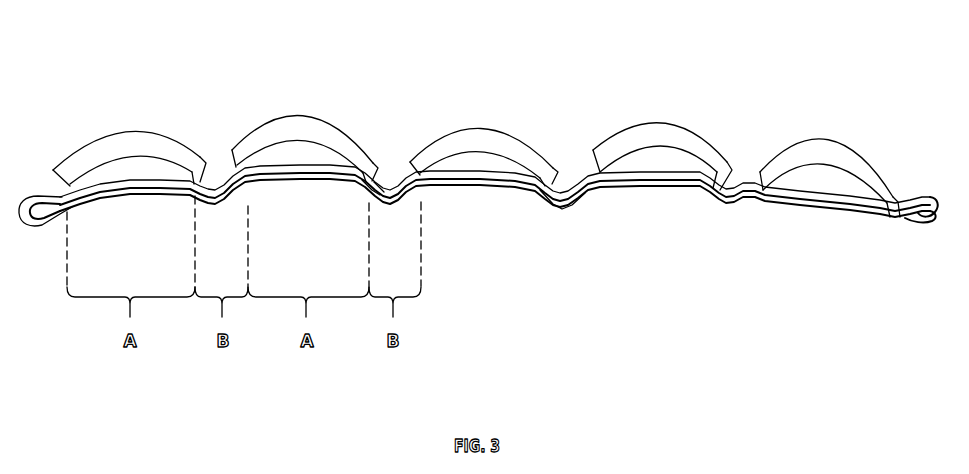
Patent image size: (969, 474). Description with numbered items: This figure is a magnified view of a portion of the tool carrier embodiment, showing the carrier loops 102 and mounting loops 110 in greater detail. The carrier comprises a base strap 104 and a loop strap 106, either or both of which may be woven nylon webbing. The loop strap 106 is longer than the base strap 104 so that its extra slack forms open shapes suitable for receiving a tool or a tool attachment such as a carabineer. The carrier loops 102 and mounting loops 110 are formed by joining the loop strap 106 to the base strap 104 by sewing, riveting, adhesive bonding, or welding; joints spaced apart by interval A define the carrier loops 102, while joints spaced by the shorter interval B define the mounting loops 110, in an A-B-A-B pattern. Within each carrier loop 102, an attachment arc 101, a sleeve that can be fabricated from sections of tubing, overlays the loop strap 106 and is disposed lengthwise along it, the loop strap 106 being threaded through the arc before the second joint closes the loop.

The attachment arc 101 is at (305, 122).
The carrier loop 102 is at (247, 115).
The base strap 104 is at (338, 182).
The loop strap 106 is at (376, 168).
The mounting loop 110 is at (562, 212).